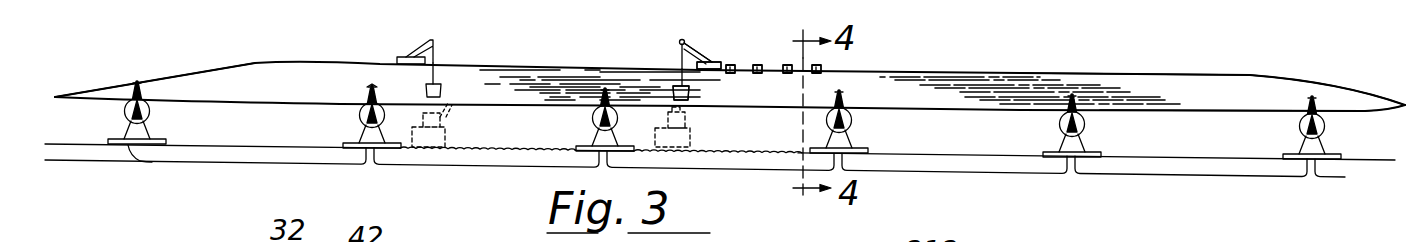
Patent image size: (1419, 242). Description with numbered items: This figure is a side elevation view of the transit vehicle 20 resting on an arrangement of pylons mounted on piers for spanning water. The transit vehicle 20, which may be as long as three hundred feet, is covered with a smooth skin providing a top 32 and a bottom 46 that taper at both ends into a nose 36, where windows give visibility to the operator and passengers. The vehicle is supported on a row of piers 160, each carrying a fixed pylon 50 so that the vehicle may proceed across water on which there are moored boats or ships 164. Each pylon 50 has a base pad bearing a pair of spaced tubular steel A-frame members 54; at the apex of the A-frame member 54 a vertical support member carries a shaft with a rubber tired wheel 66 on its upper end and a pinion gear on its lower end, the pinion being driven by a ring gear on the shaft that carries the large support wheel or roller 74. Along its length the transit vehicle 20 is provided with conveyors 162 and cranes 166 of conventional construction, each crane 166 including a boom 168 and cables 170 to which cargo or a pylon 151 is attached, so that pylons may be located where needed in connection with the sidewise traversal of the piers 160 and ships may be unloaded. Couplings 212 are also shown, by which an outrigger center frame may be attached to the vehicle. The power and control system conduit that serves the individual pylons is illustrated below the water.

The transit vehicle 20 is at (596, 63).
The top 32 is at (1059, 68).
The nose 36 is at (1403, 103).
The bottom 46 is at (1193, 112).
The fixed pylon 50 is at (856, 126).
The A-frame member 54 is at (1297, 143).
The rubber tired wheel 66 is at (371, 90).
The large support wheel or roller 74 is at (356, 119).
The cargo or pylon 151 is at (690, 98).
The pier 160 is at (157, 148).
The conveyor 162 is at (445, 120).
The moored boat or ship 164 is at (690, 141).
The crane 166 is at (710, 61).
The boom 168 is at (696, 40).
The cables 170 is at (680, 55).
The couplings 212 is at (824, 68).